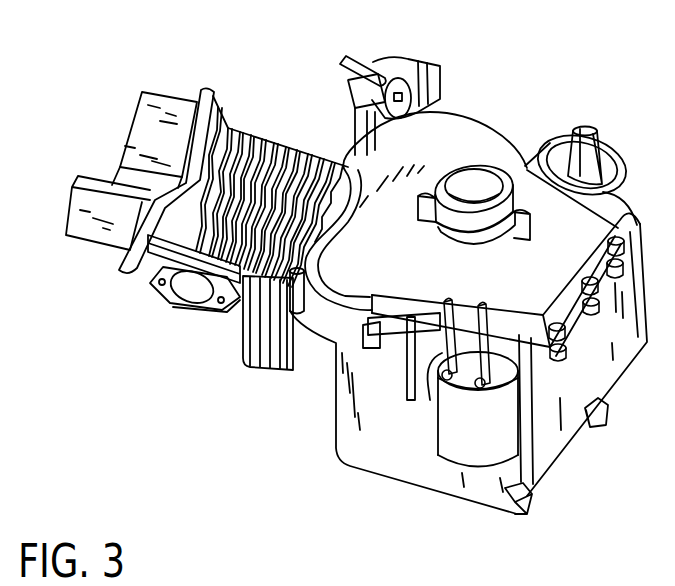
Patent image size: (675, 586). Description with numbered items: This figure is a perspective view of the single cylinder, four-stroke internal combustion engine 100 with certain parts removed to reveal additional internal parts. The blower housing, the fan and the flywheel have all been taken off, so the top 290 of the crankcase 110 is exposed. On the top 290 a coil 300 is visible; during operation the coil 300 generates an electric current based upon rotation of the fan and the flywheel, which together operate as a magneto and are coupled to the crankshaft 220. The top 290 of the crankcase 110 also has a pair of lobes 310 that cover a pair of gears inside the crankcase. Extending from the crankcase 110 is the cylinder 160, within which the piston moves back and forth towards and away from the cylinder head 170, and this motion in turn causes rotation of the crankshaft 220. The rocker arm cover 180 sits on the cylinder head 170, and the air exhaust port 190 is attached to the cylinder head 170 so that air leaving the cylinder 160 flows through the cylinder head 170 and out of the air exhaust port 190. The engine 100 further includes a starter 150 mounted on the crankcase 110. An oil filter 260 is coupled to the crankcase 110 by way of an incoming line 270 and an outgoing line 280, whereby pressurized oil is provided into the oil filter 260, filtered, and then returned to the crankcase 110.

The single cylinder internal combustion engine 100 is at (213, 431).
The crankcase 110 is at (383, 484).
The starter 150 is at (623, 188).
The cylinder 160 is at (270, 368).
The cylinder head 170 is at (248, 134).
The rocker arm cover 180 is at (87, 245).
The air exhaust port 190 is at (167, 288).
The crankshaft 220 is at (477, 200).
The oil filter 260 is at (517, 423).
The incoming line 270 is at (443, 363).
The outgoing line 280 is at (482, 328).
The top of the crankcase 290 is at (470, 117).
The coil 300 is at (382, 62).
The lobes 310 is at (352, 166).